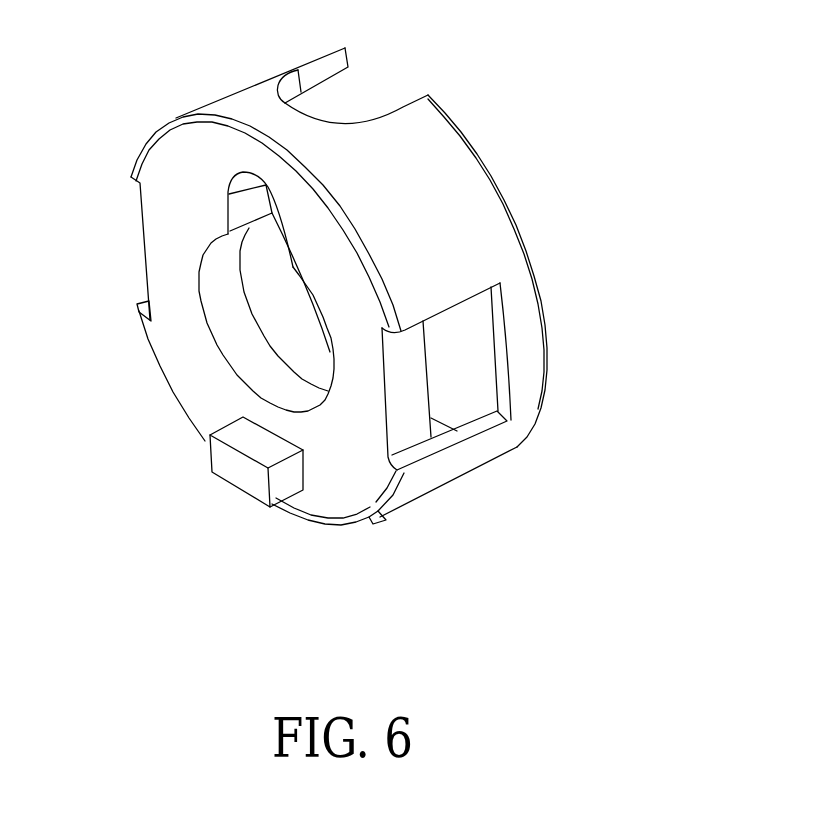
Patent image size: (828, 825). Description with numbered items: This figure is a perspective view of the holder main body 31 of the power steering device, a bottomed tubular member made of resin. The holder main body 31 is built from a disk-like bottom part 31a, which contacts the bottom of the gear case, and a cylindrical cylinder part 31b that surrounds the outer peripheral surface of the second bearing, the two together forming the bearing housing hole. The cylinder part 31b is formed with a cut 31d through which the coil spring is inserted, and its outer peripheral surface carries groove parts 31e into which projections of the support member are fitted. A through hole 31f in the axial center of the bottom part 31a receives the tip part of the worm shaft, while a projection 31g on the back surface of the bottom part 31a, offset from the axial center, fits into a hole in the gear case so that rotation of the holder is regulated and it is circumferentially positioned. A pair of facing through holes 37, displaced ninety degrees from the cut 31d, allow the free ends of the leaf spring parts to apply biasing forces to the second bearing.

The holder main body 31 is at (493, 123).
The bottom part 31a is at (337, 500).
The cylinder part 31b is at (500, 242).
The cut 31d is at (397, 104).
The groove part 31e is at (370, 523).
The through hole 31f is at (240, 353).
The projection 31g is at (243, 477).
The through hole 37 is at (140, 248).